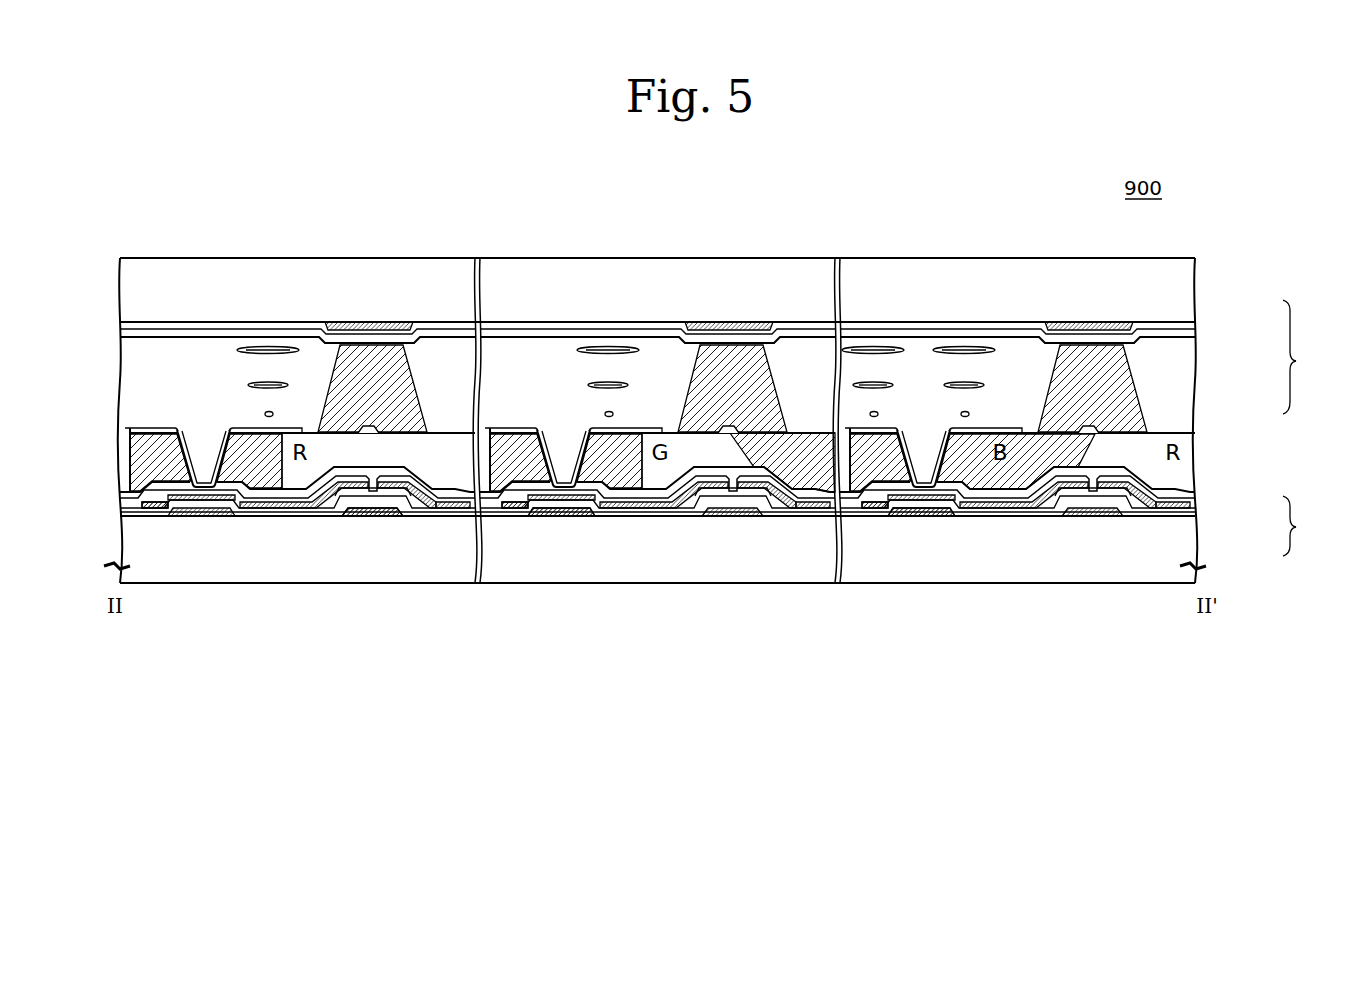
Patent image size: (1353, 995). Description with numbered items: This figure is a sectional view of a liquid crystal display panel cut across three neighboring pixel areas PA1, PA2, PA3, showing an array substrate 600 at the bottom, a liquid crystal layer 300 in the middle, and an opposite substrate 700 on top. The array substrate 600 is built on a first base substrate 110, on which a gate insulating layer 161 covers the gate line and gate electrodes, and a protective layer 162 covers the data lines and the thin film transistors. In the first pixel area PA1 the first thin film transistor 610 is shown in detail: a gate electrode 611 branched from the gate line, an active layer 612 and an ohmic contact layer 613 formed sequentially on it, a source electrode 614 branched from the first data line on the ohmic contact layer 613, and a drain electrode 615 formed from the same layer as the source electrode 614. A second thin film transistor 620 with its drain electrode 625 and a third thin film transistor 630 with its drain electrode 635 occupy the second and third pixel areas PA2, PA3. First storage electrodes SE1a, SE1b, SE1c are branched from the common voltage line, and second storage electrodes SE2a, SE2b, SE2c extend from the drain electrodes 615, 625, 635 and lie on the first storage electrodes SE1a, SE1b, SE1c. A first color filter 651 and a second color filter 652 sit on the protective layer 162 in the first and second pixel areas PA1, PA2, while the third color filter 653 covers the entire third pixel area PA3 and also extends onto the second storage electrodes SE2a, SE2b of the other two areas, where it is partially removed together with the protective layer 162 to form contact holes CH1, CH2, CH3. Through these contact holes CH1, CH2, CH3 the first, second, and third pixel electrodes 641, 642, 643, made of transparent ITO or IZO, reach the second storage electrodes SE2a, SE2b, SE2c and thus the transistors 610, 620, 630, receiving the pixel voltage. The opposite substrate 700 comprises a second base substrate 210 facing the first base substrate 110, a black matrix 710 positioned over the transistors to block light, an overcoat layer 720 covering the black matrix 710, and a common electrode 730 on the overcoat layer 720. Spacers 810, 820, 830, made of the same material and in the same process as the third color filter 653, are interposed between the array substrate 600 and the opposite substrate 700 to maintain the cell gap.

The second base substrate 210 is at (1188, 308).
The black matrix 710 is at (1195, 330).
The overcoat layer 720 is at (1150, 336).
The common electrode 730 is at (1160, 345).
The opposite substrate 700 is at (1312, 357).
The liquid crystal layer 300 is at (1185, 404).
The spacer 810 is at (372, 372).
The spacer 820 is at (732, 372).
The spacer 830 is at (1090, 372).
The first base substrate 110 is at (1185, 541).
The gate insulating layer 161 is at (1187, 515).
The protective layer 162 is at (1185, 497).
The array substrate 600 is at (1312, 526).
The first thin film transistor 610 is at (268, 614).
The gate electrode 611 is at (373, 513).
The active layer 612 is at (333, 498).
The ohmic contact layer 613 is at (417, 500).
The source electrode 614 is at (460, 508).
The drain electrode 615 is at (290, 507).
The second thin film transistor 620 is at (748, 525).
The drain electrode 625 is at (657, 507).
The third thin film transistor 630 is at (1093, 525).
The drain electrode 635 is at (993, 509).
The first pixel electrode 641 is at (137, 425).
The second pixel electrode 642 is at (497, 425).
The third pixel electrode 643 is at (1015, 426).
The first color filter 651 is at (287, 482).
The second color filter 652 is at (651, 475).
The third color filter 653 is at (133, 457).
The contact hole CH1 is at (202, 468).
The contact hole CH2 is at (561, 468).
The contact hole CH3 is at (922, 468).
The first storage electrode SE1a is at (207, 512).
The first storage electrode SE1b is at (567, 512).
The first storage electrode SE1c is at (940, 512).
The second storage electrode SE2a is at (152, 504).
The second storage electrode SE2b is at (512, 504).
The second storage electrode SE2c is at (886, 504).
The first pixel area PA1 is at (476, 699).
The second pixel area PA2 is at (835, 699).
The third pixel area PA3 is at (1195, 712).